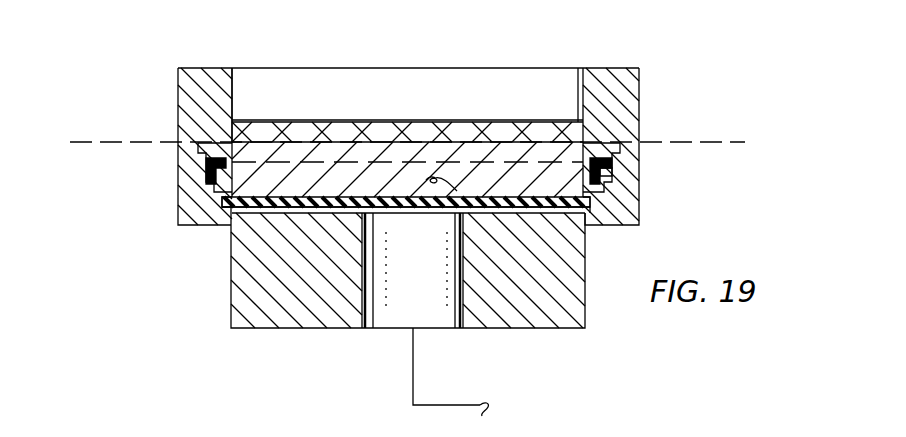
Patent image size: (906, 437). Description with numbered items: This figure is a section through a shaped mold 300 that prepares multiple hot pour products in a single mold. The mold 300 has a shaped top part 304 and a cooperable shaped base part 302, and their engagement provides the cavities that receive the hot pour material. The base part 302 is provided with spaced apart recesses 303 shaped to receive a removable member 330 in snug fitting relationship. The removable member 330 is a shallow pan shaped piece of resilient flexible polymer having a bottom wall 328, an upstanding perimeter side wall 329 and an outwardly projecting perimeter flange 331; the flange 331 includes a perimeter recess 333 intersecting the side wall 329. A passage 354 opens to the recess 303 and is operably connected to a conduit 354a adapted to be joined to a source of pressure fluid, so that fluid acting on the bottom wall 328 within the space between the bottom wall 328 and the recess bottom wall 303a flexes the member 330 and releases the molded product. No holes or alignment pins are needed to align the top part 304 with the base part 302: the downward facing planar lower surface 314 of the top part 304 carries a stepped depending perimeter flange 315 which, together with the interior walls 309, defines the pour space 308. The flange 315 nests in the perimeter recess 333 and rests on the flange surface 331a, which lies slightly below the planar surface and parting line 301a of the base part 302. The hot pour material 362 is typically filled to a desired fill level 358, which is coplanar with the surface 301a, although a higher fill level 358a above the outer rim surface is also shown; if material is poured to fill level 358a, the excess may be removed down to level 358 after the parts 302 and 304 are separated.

The shaped mold 300 is at (746, 150).
The parting line 301a is at (640, 117).
The base part 302 is at (588, 310).
The recess 303 is at (185, 88).
The recess bottom wall 303a is at (333, 210).
The top part 304 is at (178, 108).
The pour space 308 is at (452, 103).
The interior wall 309 is at (574, 92).
The lower surface 314 is at (192, 155).
The depending perimeter flange 315 is at (558, 122).
The bottom wall 328 is at (282, 198).
The side wall 329 is at (255, 198).
The removable member 330 is at (616, 174).
The perimeter flange 331 is at (200, 168).
The flange surface 331a is at (605, 145).
The perimeter recess 333 is at (272, 126).
The passage 354 is at (373, 290).
The conduit 354a is at (413, 387).
The fill level 358 is at (395, 125).
The fill level 358a is at (533, 93).
The hot pour material 362 is at (455, 207).